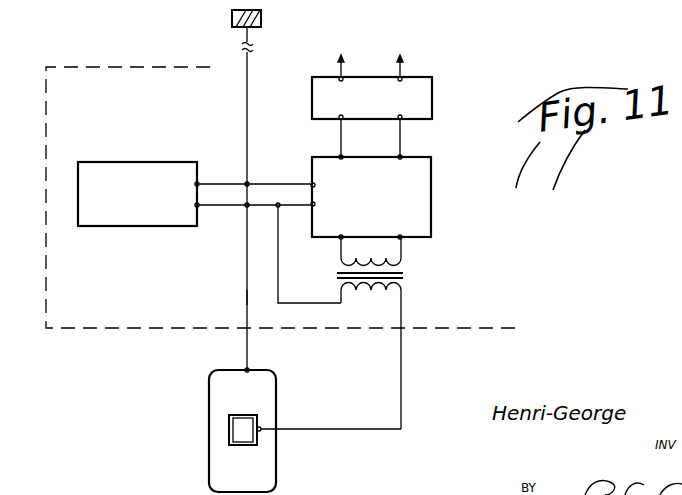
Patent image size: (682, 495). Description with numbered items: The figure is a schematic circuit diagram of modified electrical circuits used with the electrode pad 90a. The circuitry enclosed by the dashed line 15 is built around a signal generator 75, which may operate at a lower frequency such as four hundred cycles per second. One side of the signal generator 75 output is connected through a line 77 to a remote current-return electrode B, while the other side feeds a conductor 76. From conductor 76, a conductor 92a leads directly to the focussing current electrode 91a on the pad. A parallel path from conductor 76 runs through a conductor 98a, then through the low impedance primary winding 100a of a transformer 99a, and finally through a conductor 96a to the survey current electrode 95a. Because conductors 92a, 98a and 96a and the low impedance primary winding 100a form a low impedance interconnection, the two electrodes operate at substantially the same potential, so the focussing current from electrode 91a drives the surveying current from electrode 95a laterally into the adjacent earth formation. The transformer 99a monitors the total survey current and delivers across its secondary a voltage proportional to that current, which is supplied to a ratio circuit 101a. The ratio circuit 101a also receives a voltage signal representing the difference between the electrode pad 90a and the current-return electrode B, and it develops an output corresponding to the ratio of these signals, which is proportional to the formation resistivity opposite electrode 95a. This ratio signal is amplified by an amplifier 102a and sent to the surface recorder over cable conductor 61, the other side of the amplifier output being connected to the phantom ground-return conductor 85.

The dashed enclosure / measuring apparatus 15 is at (66, 66).
The remote current-return electrode B is at (232, 16).
The connecting line 77 is at (247, 110).
The signal generator 75 is at (135, 161).
The conductor 76 is at (227, 208).
The phantom ground-return conductor 85 is at (340, 75).
The cable conductor 61 is at (402, 76).
The amplifier 102a is at (432, 99).
The ratio circuit 101a is at (431, 196).
The conductor 98a is at (278, 262).
The transformer 99a is at (412, 278).
The low impedance primary winding 100a is at (364, 292).
The conductor 92a is at (247, 299).
The focussing current electrode 91a is at (218, 393).
The survey current electrode 95a is at (228, 431).
The electrode pad 90a is at (206, 465).
The conductor 96a is at (316, 433).